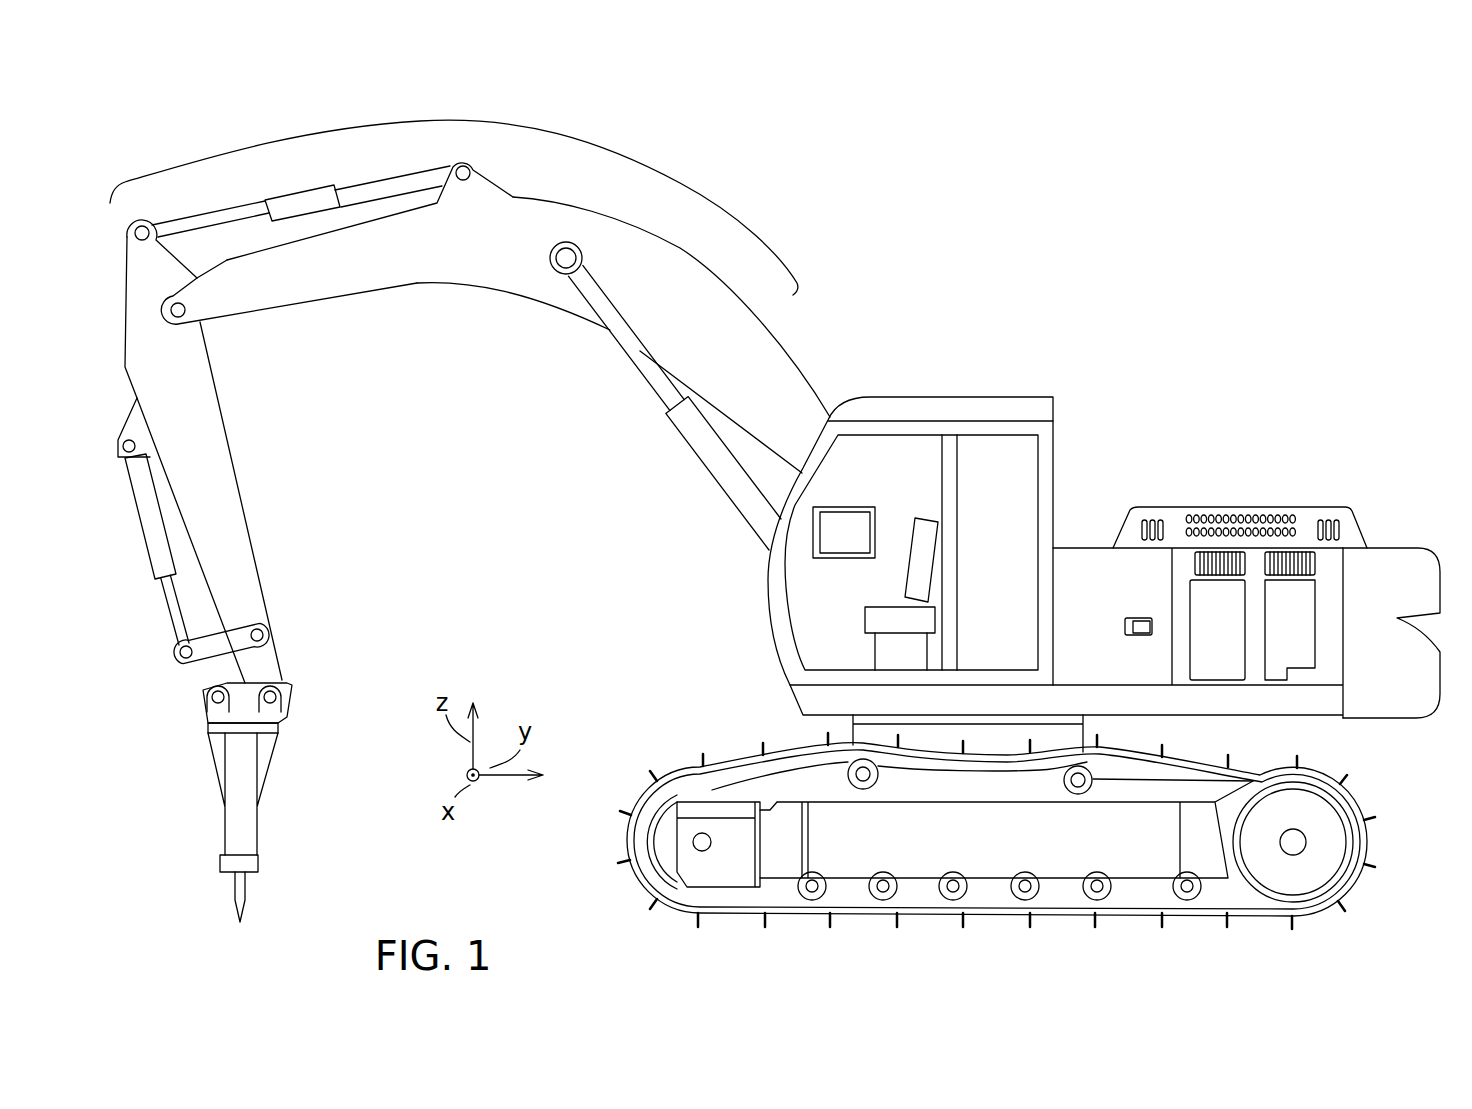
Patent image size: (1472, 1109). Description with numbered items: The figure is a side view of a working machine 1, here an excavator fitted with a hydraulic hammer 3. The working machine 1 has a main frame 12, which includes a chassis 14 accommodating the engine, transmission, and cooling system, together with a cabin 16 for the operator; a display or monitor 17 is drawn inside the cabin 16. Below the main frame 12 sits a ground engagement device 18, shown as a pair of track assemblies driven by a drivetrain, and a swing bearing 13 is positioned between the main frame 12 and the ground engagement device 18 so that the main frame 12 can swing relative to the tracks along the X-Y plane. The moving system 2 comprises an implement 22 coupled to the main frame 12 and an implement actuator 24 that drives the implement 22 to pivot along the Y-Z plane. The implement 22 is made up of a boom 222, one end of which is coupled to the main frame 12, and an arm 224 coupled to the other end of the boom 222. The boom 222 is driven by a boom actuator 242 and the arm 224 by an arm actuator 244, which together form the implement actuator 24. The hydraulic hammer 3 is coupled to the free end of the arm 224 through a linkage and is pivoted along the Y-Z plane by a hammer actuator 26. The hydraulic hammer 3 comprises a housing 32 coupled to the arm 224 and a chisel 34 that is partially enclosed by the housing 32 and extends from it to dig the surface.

The working machine 1 is at (1245, 174).
The moving system 2 is at (685, 119).
The hydraulic hammer 3 is at (304, 775).
The main frame 12 is at (1222, 417).
The swing bearing 13 is at (1087, 732).
The chassis 14 is at (1417, 550).
The cabin 16 is at (985, 397).
The display device (monitor) 17 is at (853, 507).
The ground engagement device 18 is at (1370, 895).
The implement 22 is at (520, 122).
The implement actuator 24 is at (703, 500).
The hammer actuator 26 is at (148, 510).
The housing 32 is at (213, 763).
The chisel 34 is at (242, 897).
The boom 222 is at (411, 258).
The arm 224 is at (160, 418).
The boom actuator 242 is at (700, 438).
The arm actuator 244 is at (325, 203).